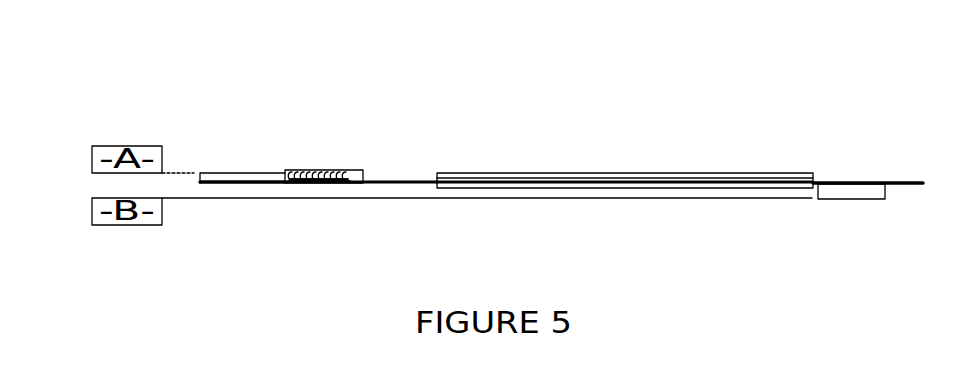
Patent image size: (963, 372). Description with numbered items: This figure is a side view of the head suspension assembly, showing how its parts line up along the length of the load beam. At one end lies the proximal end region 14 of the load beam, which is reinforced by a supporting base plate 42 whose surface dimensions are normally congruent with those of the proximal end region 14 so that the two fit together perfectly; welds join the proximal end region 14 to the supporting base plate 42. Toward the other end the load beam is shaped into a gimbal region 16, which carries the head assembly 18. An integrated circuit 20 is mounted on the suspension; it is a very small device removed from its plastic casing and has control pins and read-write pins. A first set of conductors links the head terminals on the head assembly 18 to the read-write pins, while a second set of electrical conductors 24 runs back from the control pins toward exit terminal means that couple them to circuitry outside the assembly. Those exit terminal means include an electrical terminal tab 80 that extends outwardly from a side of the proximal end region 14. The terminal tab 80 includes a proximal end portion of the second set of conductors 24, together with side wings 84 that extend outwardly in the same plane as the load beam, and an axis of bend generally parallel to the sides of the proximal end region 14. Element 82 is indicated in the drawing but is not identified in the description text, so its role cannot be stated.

The proximal end region 14 is at (321, 160).
The gimbal region 16 is at (847, 183).
The head assembly 18 is at (850, 192).
The integrated circuit 20 is at (627, 188).
The second set of electrical conductors 24 is at (437, 175).
The supporting base plate 42 is at (231, 178).
The electrical terminal tab 80 is at (318, 218).
The first winding end 82 is at (317, 183).
The side wings 84 is at (342, 183).